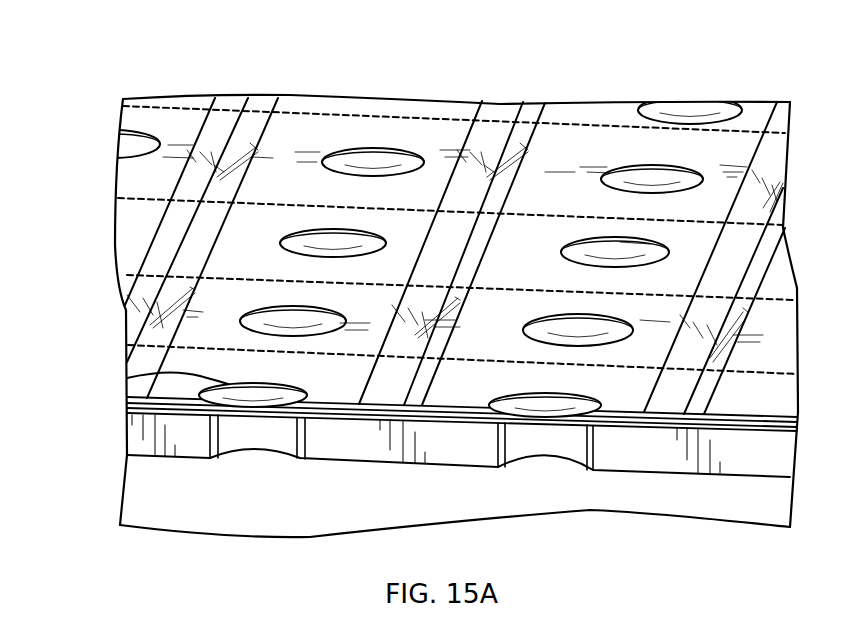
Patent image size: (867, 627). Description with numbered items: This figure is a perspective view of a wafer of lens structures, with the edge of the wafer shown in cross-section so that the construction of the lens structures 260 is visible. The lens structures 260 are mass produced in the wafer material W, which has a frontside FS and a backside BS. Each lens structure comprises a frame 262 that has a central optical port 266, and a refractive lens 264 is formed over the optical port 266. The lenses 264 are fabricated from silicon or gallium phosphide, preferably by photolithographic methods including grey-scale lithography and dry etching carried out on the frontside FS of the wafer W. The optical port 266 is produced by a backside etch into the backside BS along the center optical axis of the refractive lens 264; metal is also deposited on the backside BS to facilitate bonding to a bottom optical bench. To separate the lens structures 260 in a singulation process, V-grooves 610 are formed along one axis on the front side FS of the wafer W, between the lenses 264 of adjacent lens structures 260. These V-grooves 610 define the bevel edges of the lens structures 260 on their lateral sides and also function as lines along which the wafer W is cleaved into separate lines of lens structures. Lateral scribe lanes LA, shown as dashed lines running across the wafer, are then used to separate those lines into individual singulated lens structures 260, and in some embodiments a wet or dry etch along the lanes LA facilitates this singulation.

The wafer material W is at (580, 160).
The frontside of the wafer FS is at (537, 271).
The backside of the wafer BS is at (148, 470).
The lateral scribe lanes LA is at (125, 197).
The V-grooves 610 is at (276, 87).
The lens structures 260 is at (305, 227).
The frame 262 is at (182, 362).
The refractive lens 264 is at (127, 378).
The optical port 266 is at (227, 437).